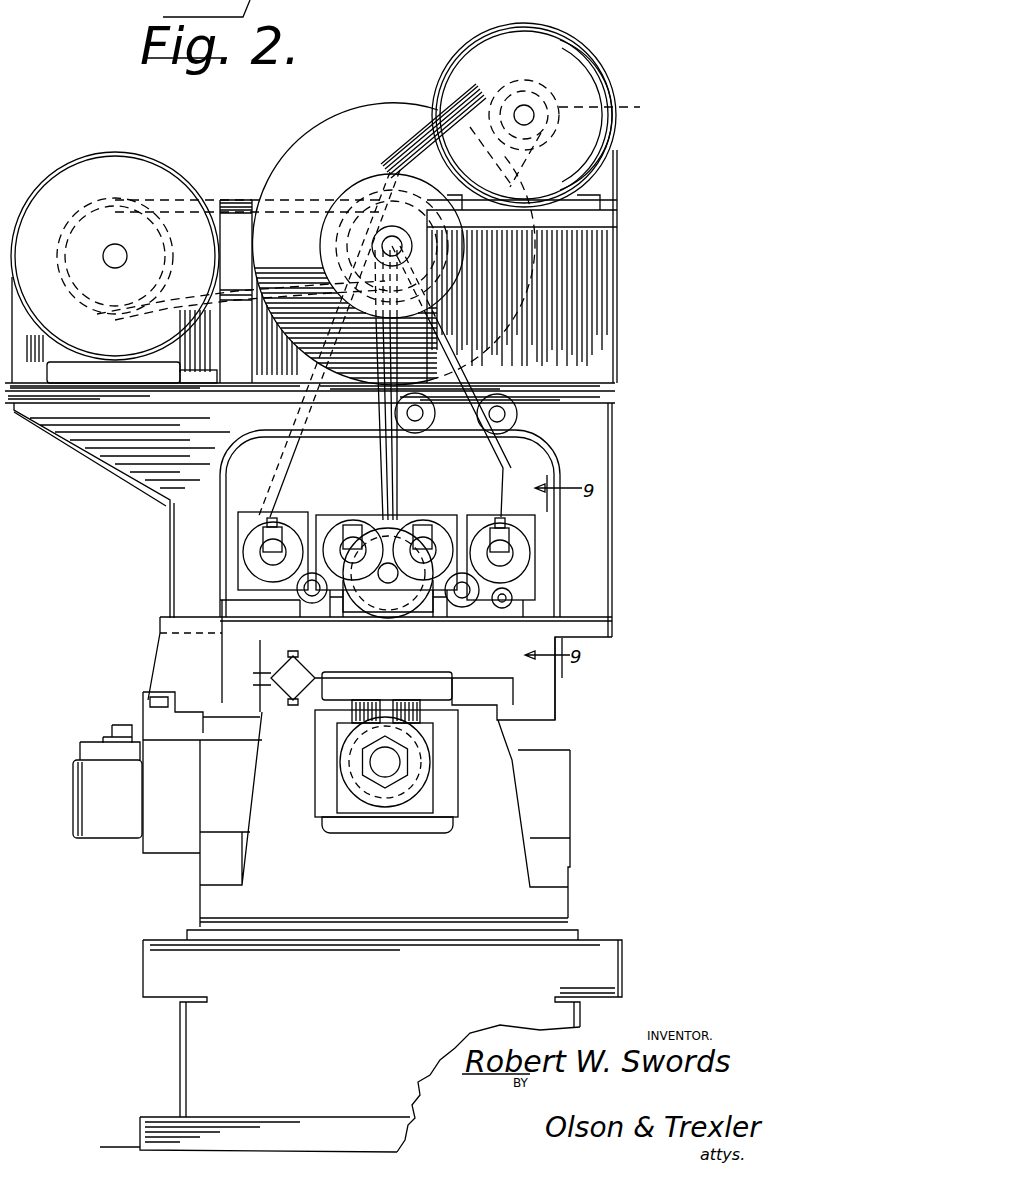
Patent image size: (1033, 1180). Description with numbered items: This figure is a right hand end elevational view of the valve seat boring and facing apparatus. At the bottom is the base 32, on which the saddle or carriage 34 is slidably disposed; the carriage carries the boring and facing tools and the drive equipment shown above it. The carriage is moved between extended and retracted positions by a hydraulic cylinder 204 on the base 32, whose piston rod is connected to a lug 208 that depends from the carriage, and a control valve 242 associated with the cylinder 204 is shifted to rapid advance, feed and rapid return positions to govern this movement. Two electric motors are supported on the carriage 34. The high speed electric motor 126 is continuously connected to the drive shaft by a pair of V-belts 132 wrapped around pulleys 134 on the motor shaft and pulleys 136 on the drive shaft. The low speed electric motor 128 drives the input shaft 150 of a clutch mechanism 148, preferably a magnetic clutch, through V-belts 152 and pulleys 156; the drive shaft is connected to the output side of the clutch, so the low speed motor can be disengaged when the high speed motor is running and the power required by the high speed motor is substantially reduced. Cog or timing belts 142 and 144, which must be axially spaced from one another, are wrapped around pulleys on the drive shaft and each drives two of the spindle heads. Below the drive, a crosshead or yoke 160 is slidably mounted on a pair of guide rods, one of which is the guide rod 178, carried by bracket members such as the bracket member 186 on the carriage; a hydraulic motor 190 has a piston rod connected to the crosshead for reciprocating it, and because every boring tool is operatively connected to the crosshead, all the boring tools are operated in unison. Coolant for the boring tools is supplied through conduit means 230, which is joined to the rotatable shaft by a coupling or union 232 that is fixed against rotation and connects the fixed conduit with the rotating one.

The base 32 is at (570, 910).
The saddle or carriage 34 is at (633, 680).
The high speed electric motor 126 is at (83, 134).
The low speed electric motor 128 is at (590, 35).
The V-belts 132 is at (233, 174).
The pulleys 134 is at (163, 227).
The pulleys 136 is at (311, 215).
The cog or timing belt 142 is at (627, 457).
The cog or timing belt 144 is at (165, 520).
The clutch mechanism 148 is at (400, 67).
The input shaft 150 is at (306, 257).
The V-belts 152 is at (358, 99).
The pulleys 156 is at (343, 158).
The crosshead or yoke 160 is at (635, 583).
The guide rod 178 is at (283, 637).
The bracket member 186 is at (463, 628).
The hydraulic motor 190 is at (425, 488).
The hydraulic cylinder 204 is at (363, 850).
The lug 208 is at (570, 737).
The conduit means 230 is at (344, 520).
The coupling or union 232 is at (160, 567).
The control valve 242 is at (97, 830).